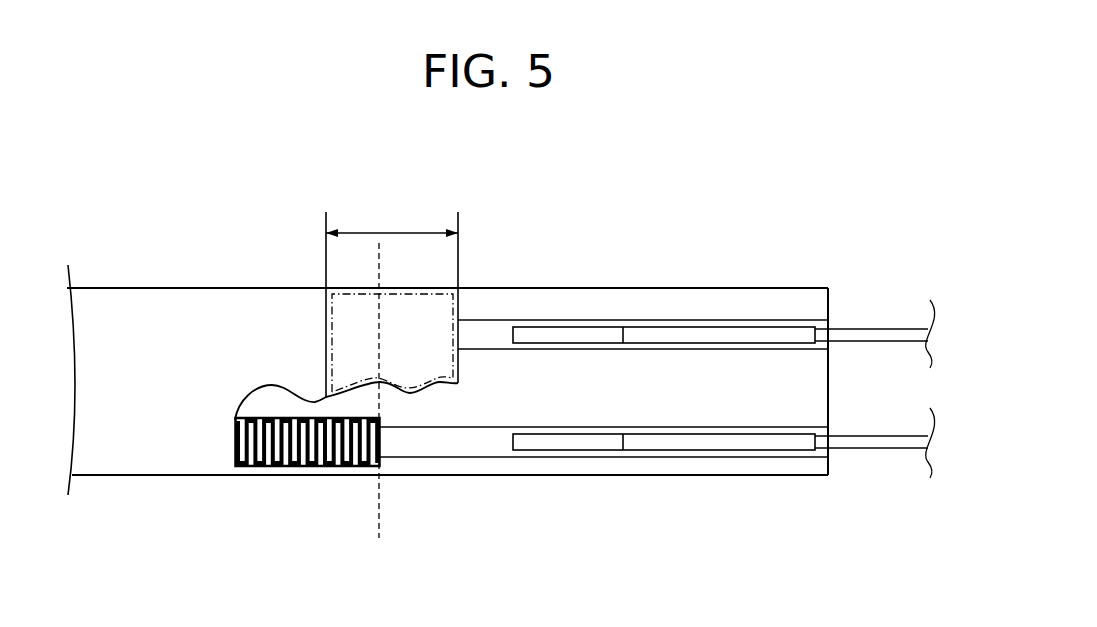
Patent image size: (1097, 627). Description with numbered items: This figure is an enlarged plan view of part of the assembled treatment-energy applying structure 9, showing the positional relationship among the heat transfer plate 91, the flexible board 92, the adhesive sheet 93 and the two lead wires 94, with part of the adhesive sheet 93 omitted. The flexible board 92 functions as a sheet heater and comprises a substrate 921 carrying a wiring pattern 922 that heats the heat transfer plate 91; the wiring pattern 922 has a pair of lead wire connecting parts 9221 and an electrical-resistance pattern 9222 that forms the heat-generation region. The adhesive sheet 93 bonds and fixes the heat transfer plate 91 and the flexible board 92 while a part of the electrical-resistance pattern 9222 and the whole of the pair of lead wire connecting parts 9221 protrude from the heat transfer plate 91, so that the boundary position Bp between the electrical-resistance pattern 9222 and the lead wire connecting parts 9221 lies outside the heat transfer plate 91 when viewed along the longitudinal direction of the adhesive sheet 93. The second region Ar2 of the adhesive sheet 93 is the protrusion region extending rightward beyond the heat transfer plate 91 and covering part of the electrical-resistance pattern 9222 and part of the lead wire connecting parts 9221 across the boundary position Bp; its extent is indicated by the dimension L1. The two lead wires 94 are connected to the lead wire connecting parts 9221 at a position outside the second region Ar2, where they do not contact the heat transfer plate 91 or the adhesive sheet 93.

The treatment-energy applying structure 9 is at (166, 228).
The heat transfer plate 91 is at (233, 288).
The flexible board 92 is at (605, 572).
The substrate 921 is at (632, 466).
The wiring pattern 922 is at (572, 528).
The lead wire connecting parts 9221 is at (505, 337).
The electrical-resistance pattern 9222 is at (325, 463).
The adhesive sheet 93 is at (356, 313).
The lead wires 94 is at (840, 440).
The length L1 is at (392, 218).
The second region Ar2 is at (391, 294).
The boundary position Bp is at (377, 514).